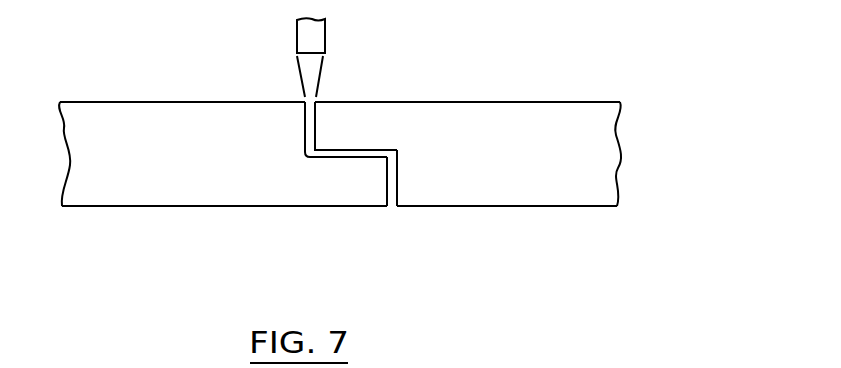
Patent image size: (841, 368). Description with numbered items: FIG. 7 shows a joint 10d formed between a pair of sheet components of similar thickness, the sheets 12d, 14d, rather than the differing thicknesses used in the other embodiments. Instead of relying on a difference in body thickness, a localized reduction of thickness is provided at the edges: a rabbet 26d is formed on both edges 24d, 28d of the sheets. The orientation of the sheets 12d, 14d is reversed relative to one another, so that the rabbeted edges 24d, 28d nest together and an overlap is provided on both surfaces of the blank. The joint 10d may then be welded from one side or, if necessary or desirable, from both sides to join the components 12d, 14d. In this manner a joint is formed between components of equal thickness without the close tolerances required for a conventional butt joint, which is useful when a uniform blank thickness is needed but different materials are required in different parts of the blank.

The joint 10d is at (328, 88).
The sheet 12d is at (115, 188).
The sheet 14d is at (598, 165).
The edge 24d is at (383, 178).
The rabbet 26d is at (308, 157).
The edge 28d is at (405, 176).